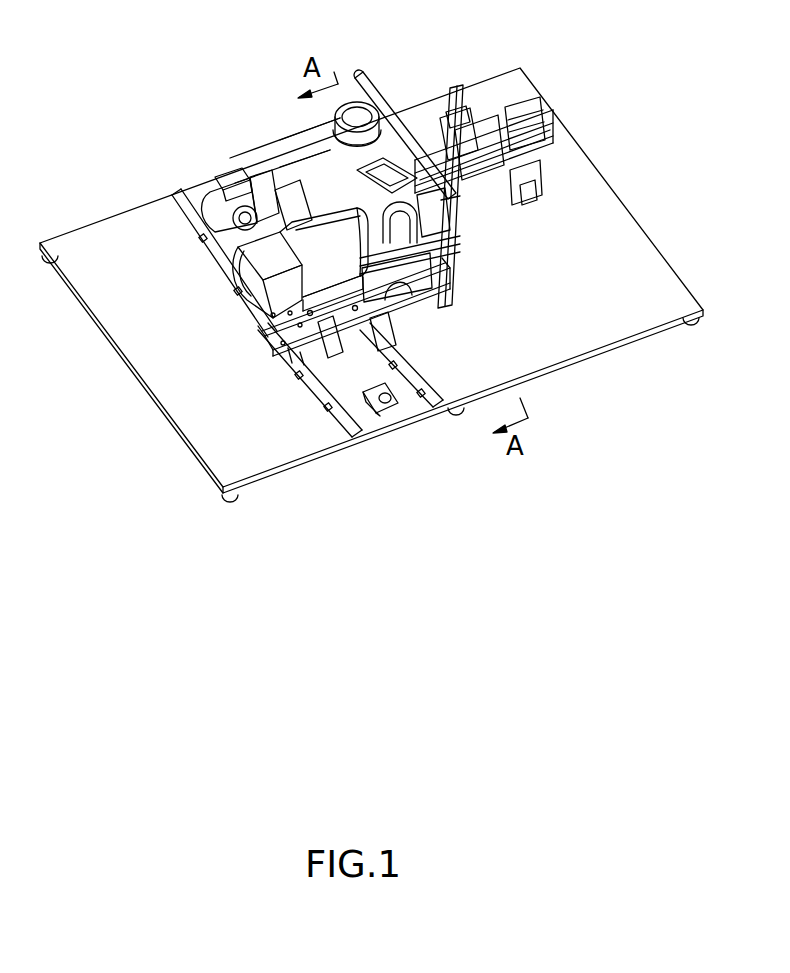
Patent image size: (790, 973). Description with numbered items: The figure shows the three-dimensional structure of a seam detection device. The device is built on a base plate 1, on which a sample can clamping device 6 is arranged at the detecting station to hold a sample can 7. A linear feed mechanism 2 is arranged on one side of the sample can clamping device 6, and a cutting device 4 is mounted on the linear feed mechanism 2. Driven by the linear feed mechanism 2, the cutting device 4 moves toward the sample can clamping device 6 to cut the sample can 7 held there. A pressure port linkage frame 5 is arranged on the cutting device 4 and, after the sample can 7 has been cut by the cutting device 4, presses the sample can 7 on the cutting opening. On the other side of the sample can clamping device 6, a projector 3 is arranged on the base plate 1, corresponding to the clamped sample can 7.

The base plate 1 is at (593, 332).
The linear feed mechanism 2 is at (310, 393).
The projector 3 is at (456, 128).
The cutting device 4 is at (340, 252).
The pressure port linkage frame 5 is at (458, 276).
The sample can clamping device 6 is at (335, 188).
The sample can 7 is at (362, 100).